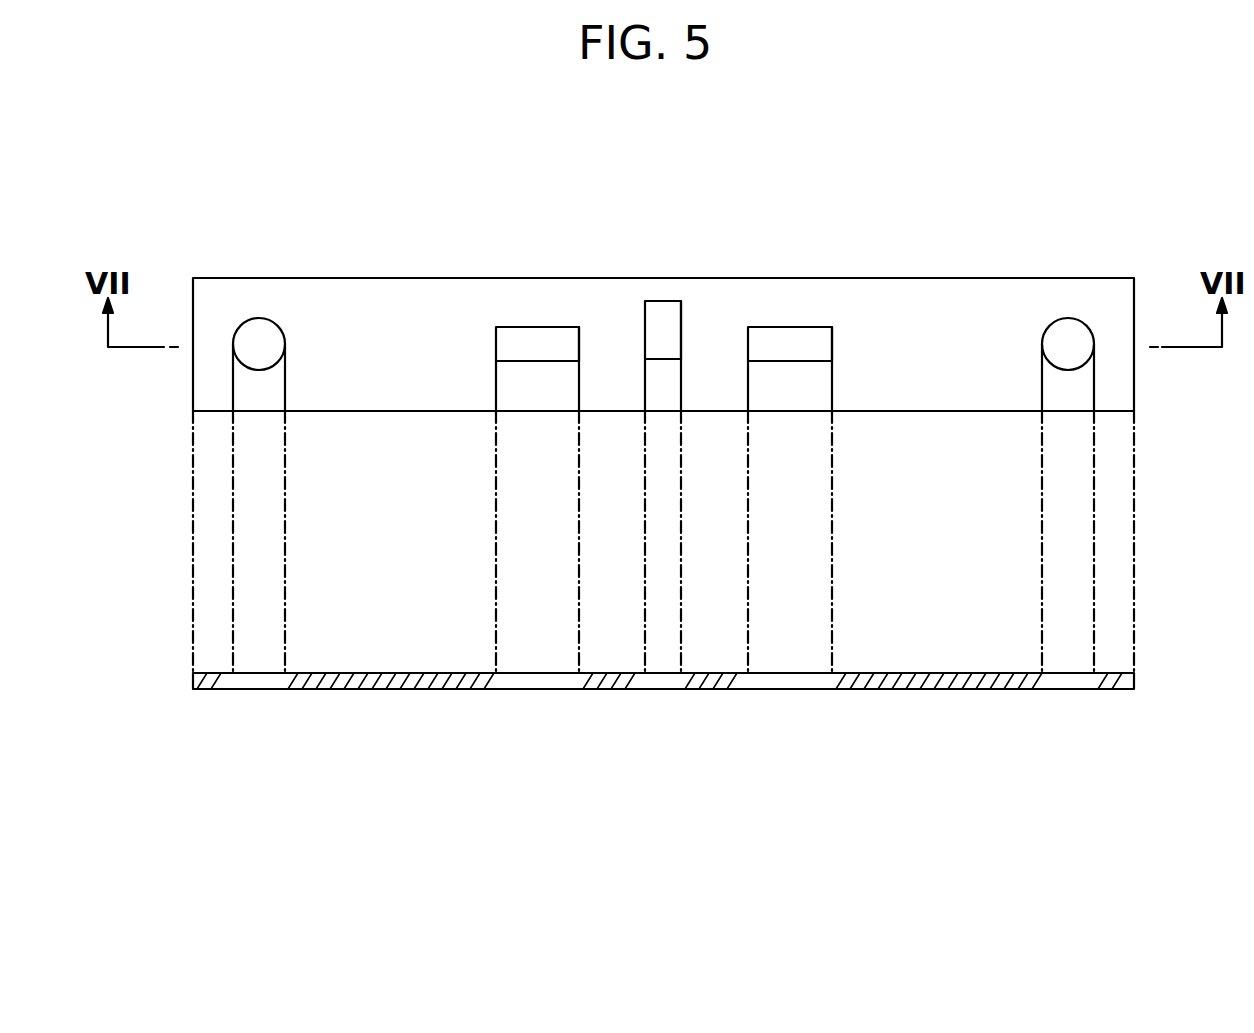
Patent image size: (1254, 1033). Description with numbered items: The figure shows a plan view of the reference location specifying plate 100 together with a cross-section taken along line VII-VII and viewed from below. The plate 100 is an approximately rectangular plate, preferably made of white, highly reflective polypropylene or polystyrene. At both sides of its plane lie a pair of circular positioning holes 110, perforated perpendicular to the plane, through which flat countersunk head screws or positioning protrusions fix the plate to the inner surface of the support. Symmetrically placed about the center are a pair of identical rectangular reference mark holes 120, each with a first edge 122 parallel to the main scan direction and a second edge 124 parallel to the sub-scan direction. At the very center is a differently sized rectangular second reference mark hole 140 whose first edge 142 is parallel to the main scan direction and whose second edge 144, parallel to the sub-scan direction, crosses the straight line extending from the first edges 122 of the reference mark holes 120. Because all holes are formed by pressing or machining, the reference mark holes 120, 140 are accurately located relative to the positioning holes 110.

The reference location specifying plate 100 is at (532, 115).
The positioning holes 110 is at (265, 396).
The reference mark holes 120 is at (824, 301).
The first edge 122 is at (540, 333).
The second edge 124 is at (579, 328).
The second reference mark hole 140 is at (666, 395).
The first edge 142 is at (664, 306).
The second edge 144 is at (682, 322).